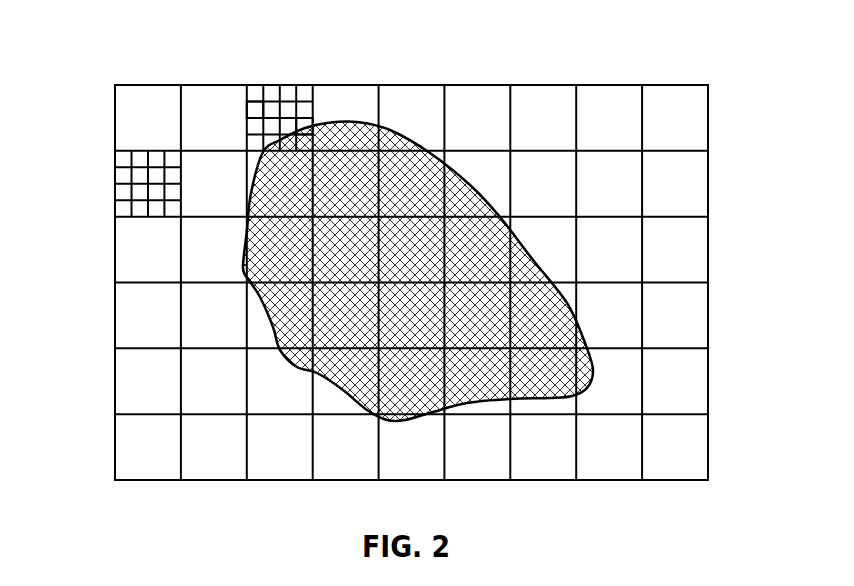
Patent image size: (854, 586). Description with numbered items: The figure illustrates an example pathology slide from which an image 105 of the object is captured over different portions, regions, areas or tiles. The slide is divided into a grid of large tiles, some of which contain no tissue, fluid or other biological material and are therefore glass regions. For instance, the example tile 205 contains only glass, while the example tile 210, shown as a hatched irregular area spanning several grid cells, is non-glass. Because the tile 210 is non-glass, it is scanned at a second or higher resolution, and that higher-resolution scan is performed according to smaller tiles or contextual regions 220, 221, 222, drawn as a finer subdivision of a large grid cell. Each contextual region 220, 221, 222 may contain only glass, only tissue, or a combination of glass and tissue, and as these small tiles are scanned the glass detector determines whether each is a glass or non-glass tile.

The image 105 is at (715, 528).
The tile 205 is at (381, 269).
The tile 210 is at (427, 240).
The contextual region 220 is at (318, 96).
The contextual region 221 is at (206, 79).
The contextual region 222 is at (249, 71).